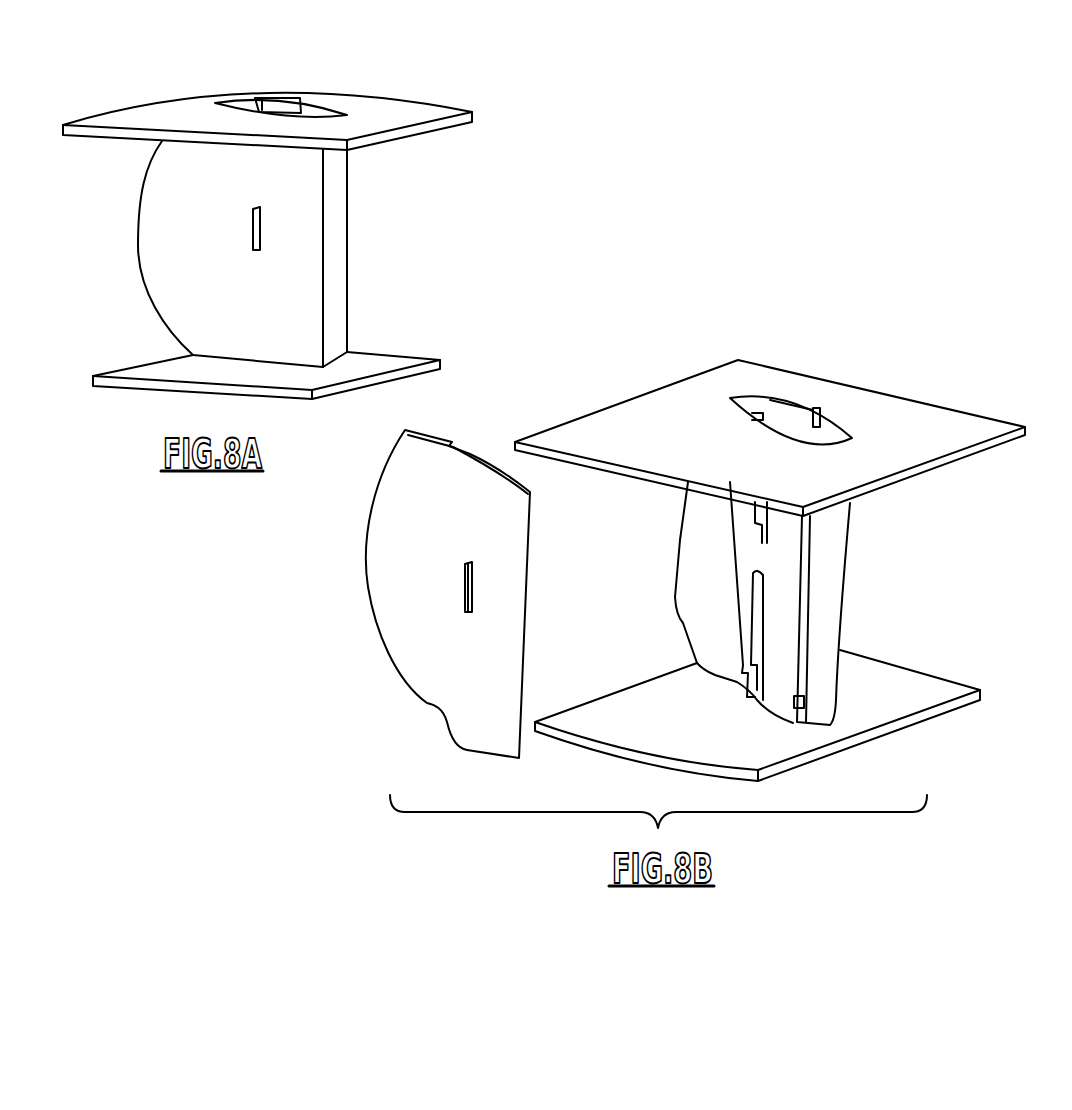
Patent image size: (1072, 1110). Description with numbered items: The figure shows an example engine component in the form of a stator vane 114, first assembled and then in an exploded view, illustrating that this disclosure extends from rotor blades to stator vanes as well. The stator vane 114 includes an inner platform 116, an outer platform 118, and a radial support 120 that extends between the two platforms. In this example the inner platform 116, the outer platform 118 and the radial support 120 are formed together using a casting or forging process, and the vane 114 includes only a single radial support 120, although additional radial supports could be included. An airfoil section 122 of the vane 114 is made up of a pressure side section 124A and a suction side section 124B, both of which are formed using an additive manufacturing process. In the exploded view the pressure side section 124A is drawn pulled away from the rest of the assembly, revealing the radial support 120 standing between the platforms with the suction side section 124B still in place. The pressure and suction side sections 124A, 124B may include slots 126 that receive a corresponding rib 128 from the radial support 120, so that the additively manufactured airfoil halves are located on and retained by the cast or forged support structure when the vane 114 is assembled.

In FIG. 8A, the stator vane 114 is at (495, 132).
In FIG. 8B, the stator vane 114 is at (670, 375).
In FIG. 8A, the inner platform 116 is at (385, 360).
In FIG. 8B, the inner platform 116 is at (893, 683).
In FIG. 8A, the outer platform 118 is at (407, 110).
In FIG. 8B, the outer platform 118 is at (795, 377).
In FIG. 8A, the radial support 120 is at (283, 107).
In FIG. 8B, the radial support 120 is at (803, 437).
In FIG. 8A, the airfoil section 122 is at (365, 226).
In FIG. 8B, the airfoil section 122 is at (857, 556).
In FIG. 8A, the pressure side section 124A is at (167, 230).
In FIG. 8B, the pressure side section 124A is at (400, 542).
In FIG. 8A, the suction side section 124B is at (342, 193).
In FIG. 8B, the suction side section 124B is at (842, 543).
In FIG. 8B, the slot 126 is at (467, 587).
In FIG. 8B, the rib 128 is at (755, 552).